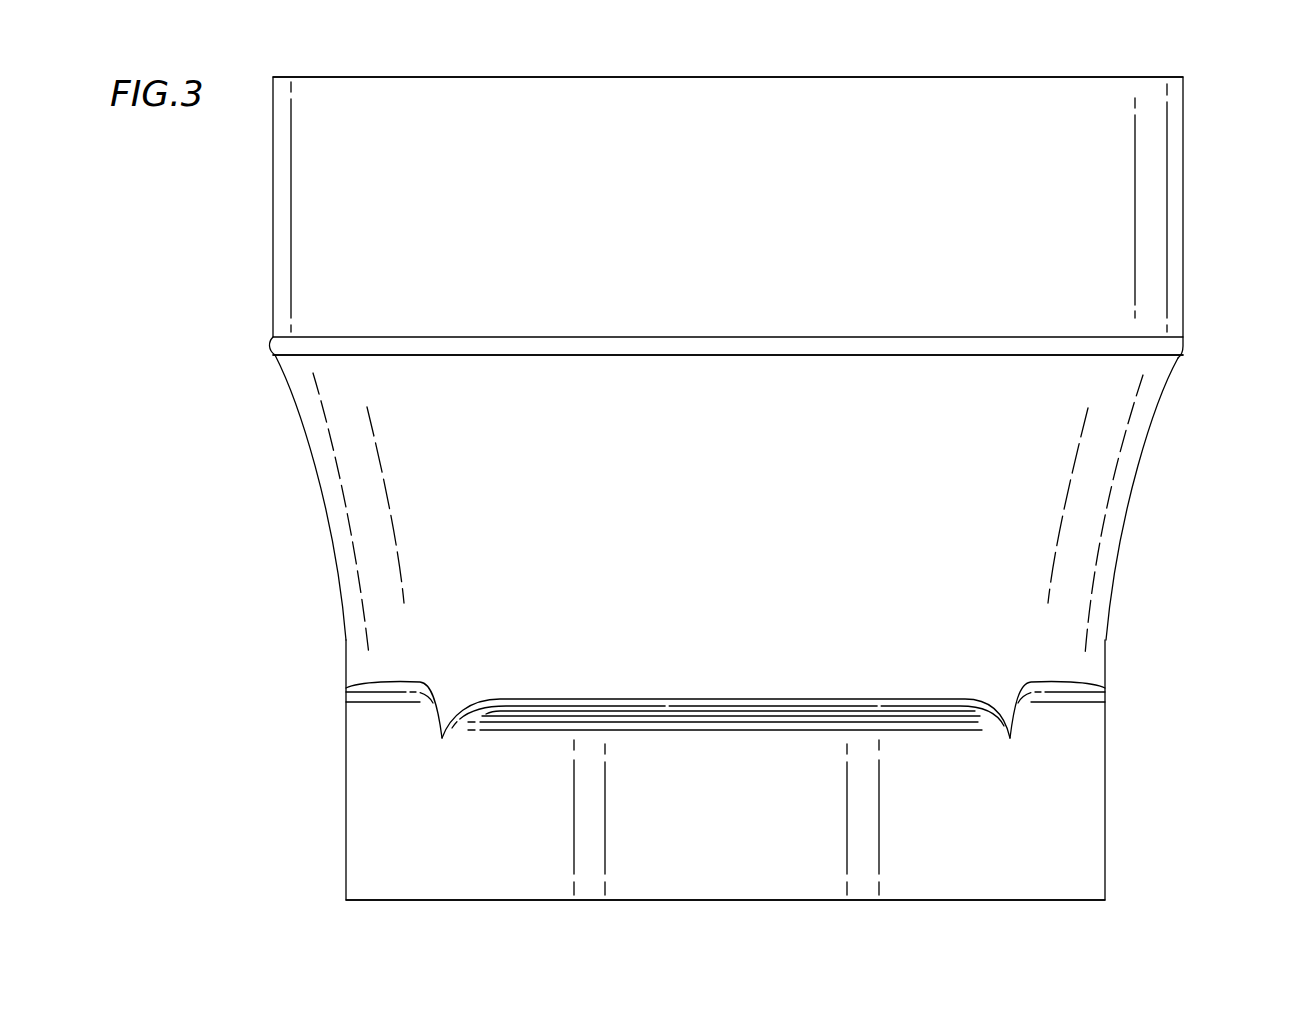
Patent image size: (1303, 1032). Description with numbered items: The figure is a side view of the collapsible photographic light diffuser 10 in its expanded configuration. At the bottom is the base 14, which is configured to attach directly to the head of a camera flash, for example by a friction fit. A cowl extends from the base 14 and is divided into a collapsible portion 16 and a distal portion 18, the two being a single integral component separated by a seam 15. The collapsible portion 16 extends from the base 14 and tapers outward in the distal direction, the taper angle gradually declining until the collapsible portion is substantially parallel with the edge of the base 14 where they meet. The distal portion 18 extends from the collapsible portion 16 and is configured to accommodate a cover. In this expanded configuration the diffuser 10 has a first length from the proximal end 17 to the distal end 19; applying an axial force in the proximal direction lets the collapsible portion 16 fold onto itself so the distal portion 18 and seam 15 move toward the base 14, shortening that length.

The diffuser 10 is at (264, 519).
The base 14 is at (381, 782).
The seam 15 is at (275, 345).
The collapsible portion 16 is at (318, 458).
The proximal end 17 is at (1088, 900).
The distal portion 18 is at (273, 213).
The distal end 19 is at (1147, 78).